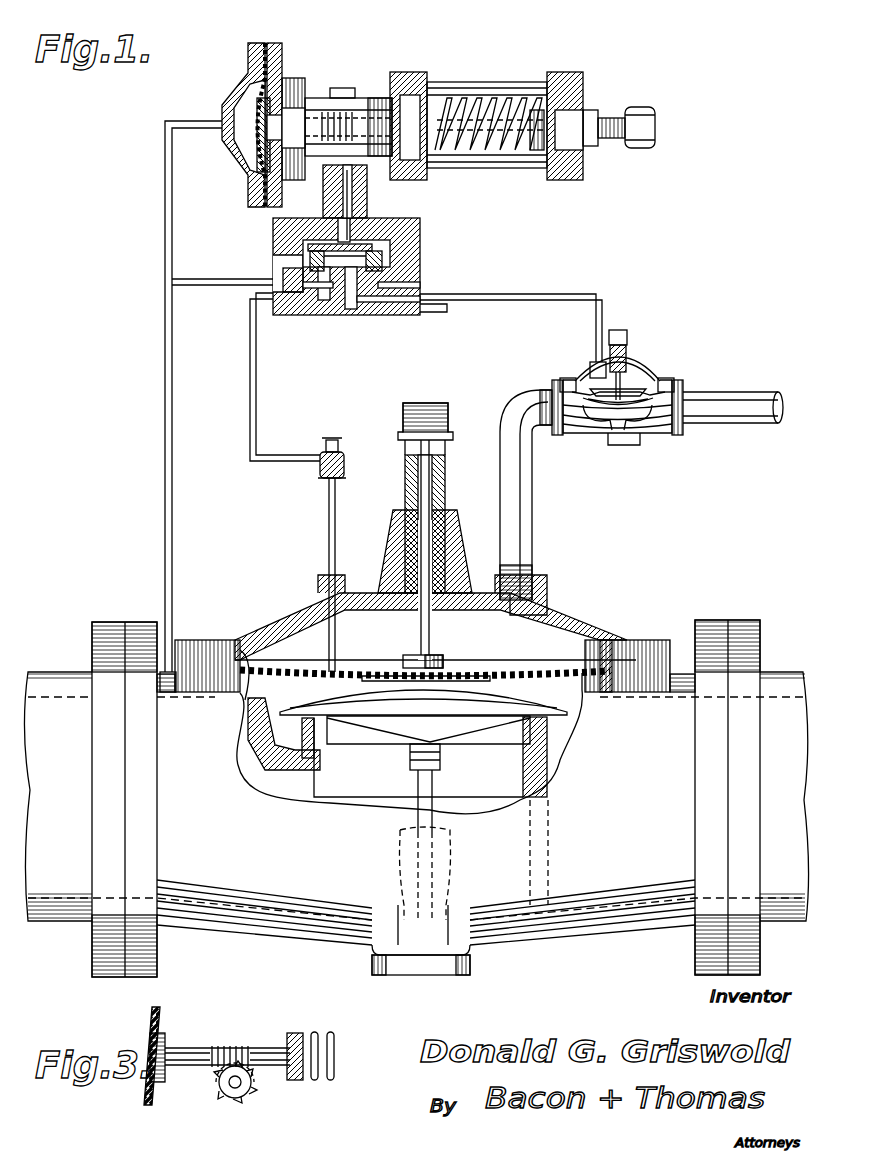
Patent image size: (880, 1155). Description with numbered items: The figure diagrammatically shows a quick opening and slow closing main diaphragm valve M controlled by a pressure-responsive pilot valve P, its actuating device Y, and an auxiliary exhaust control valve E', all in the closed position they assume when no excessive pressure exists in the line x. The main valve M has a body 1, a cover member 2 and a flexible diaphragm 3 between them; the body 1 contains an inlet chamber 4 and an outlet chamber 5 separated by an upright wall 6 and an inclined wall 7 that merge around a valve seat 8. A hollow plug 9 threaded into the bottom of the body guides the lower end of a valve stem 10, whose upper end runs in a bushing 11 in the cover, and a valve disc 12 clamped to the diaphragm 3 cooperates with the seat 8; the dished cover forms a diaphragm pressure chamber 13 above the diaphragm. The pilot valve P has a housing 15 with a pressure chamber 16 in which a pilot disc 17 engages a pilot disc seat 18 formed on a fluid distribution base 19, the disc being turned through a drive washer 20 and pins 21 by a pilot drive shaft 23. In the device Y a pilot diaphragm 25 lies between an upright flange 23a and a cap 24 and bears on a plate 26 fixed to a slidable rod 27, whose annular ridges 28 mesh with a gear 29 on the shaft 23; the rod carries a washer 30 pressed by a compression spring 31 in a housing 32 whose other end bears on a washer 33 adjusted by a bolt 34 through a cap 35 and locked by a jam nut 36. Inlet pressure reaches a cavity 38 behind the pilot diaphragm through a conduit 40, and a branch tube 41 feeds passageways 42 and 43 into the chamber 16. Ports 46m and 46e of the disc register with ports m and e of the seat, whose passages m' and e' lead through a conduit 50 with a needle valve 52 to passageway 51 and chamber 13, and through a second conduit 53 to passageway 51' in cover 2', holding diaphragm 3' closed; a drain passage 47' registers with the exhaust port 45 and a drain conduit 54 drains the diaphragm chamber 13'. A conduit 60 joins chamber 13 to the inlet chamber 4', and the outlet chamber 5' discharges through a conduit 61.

In FIG. 1, the body 1 is at (606, 915).
In FIG. 1, the cover member 2 is at (623, 646).
In FIG. 1, the flexible diaphragm 3 is at (463, 378).
In FIG. 1, the inlet chamber 4 is at (190, 799).
In FIG. 1, the outlet chamber 5 is at (702, 797).
In FIG. 1, the upright wall 6 is at (550, 838).
In FIG. 1, the inclined wall 7 is at (262, 748).
In FIG. 1, the valve seat 8 is at (520, 735).
In FIG. 1, the hollow plug 9 is at (450, 875).
In FIG. 1, the valve stem 10 is at (416, 782).
In FIG. 1, the bushing 11 is at (440, 605).
In FIG. 1, the valve disc 12 is at (545, 718).
In FIG. 1, the diaphragm pressure chamber 13 is at (435, 625).
In FIG. 1, the line x is at (776, 668).
In FIG. 1, the main valve M is at (245, 930).
In FIG. 1, the pilot valve P is at (428, 222).
In FIG. 1, the pressure-responsive device Y is at (225, 95).
In FIG. 1, the housing 15 is at (395, 250).
In FIG. 1, the pressure chamber 16 is at (308, 250).
In FIG. 1, the pilot disc 17 is at (400, 268).
In FIG. 1, the pilot disc seat 18 is at (400, 280).
In FIG. 1, the fluid distribution base 19 is at (312, 300).
In FIG. 1, the drive washer 20 is at (395, 222).
In FIG. 1, the pins 21 is at (323, 196).
In FIG. 1, the pilot drive shaft 23 is at (345, 90).
In FIG. 3, the pilot drive shaft 23 is at (230, 1088).
In FIG. 1, the upright flange 23a is at (282, 60).
In FIG. 1, the cap 24 is at (246, 55).
In FIG. 1, the pilot diaphragm 25 is at (265, 43).
In FIG. 3, the pilot diaphragm 25 is at (148, 1100).
In FIG. 1, the plate 26 is at (292, 105).
In FIG. 3, the plate 26 is at (165, 1045).
In FIG. 1, the rod 27 is at (375, 110).
In FIG. 3, the rod 27 is at (180, 1066).
In FIG. 1, the annular ridges 28 is at (378, 156).
In FIG. 3, the annular ridges 28 is at (226, 1046).
In FIG. 1, the gear 29 is at (316, 156).
In FIG. 3, the gear 29 is at (248, 1095).
In FIG. 1, the washer 30 is at (420, 82).
In FIG. 3, the washer 30 is at (292, 1082).
In FIG. 1, the compression spring 31 is at (475, 100).
In FIG. 3, the compression spring 31 is at (318, 1032).
In FIG. 1, the housing 32 is at (525, 82).
In FIG. 1, the washer 33 is at (538, 150).
In FIG. 1, the bolt 34 is at (642, 110).
In FIG. 1, the cap 35 is at (578, 80).
In FIG. 1, the jam nut 36 is at (592, 146).
In FIG. 1, the cavity 38 is at (240, 165).
In FIG. 1, the conduit 40 is at (195, 113).
In FIG. 1, the branch tube 41 is at (250, 285).
In FIG. 1, the passageway 42 is at (283, 272).
In FIG. 1, the passageway 43 is at (308, 263).
In FIG. 1, the U-shaped exhaust port 45 is at (358, 210).
In FIG. 1, the port 46m is at (300, 242).
In FIG. 1, the port 46e is at (405, 258).
In FIG. 1, the drain or exhaust passage 47' is at (375, 319).
In FIG. 1, the conduit 50 is at (250, 458).
In FIG. 1, the passageway 51 is at (342, 575).
In FIG. 1, the needle valve 52 is at (342, 455).
In FIG. 1, the second conduit 53 is at (570, 294).
In FIG. 1, the drain conduit 54 is at (440, 312).
In FIG. 1, the conduit 60 is at (533, 508).
In FIG. 1, the conduit 61 is at (740, 392).
In FIG. 1, the port m is at (328, 319).
In FIG. 1, the passageway m' is at (282, 319).
In FIG. 1, the port e is at (348, 319).
In FIG. 1, the passageway e' is at (407, 318).
In FIG. 1, the auxiliary exhaust control valve E' is at (623, 389).
In FIG. 1, the cover 2' is at (634, 375).
In FIG. 1, the diaphragm 3' is at (625, 363).
In FIG. 1, the inlet chamber 4' is at (590, 432).
In FIG. 1, the outlet chamber 5' is at (650, 427).
In FIG. 1, the diaphragm chamber 13' is at (631, 354).
In FIG. 1, the passageway 51' is at (577, 358).